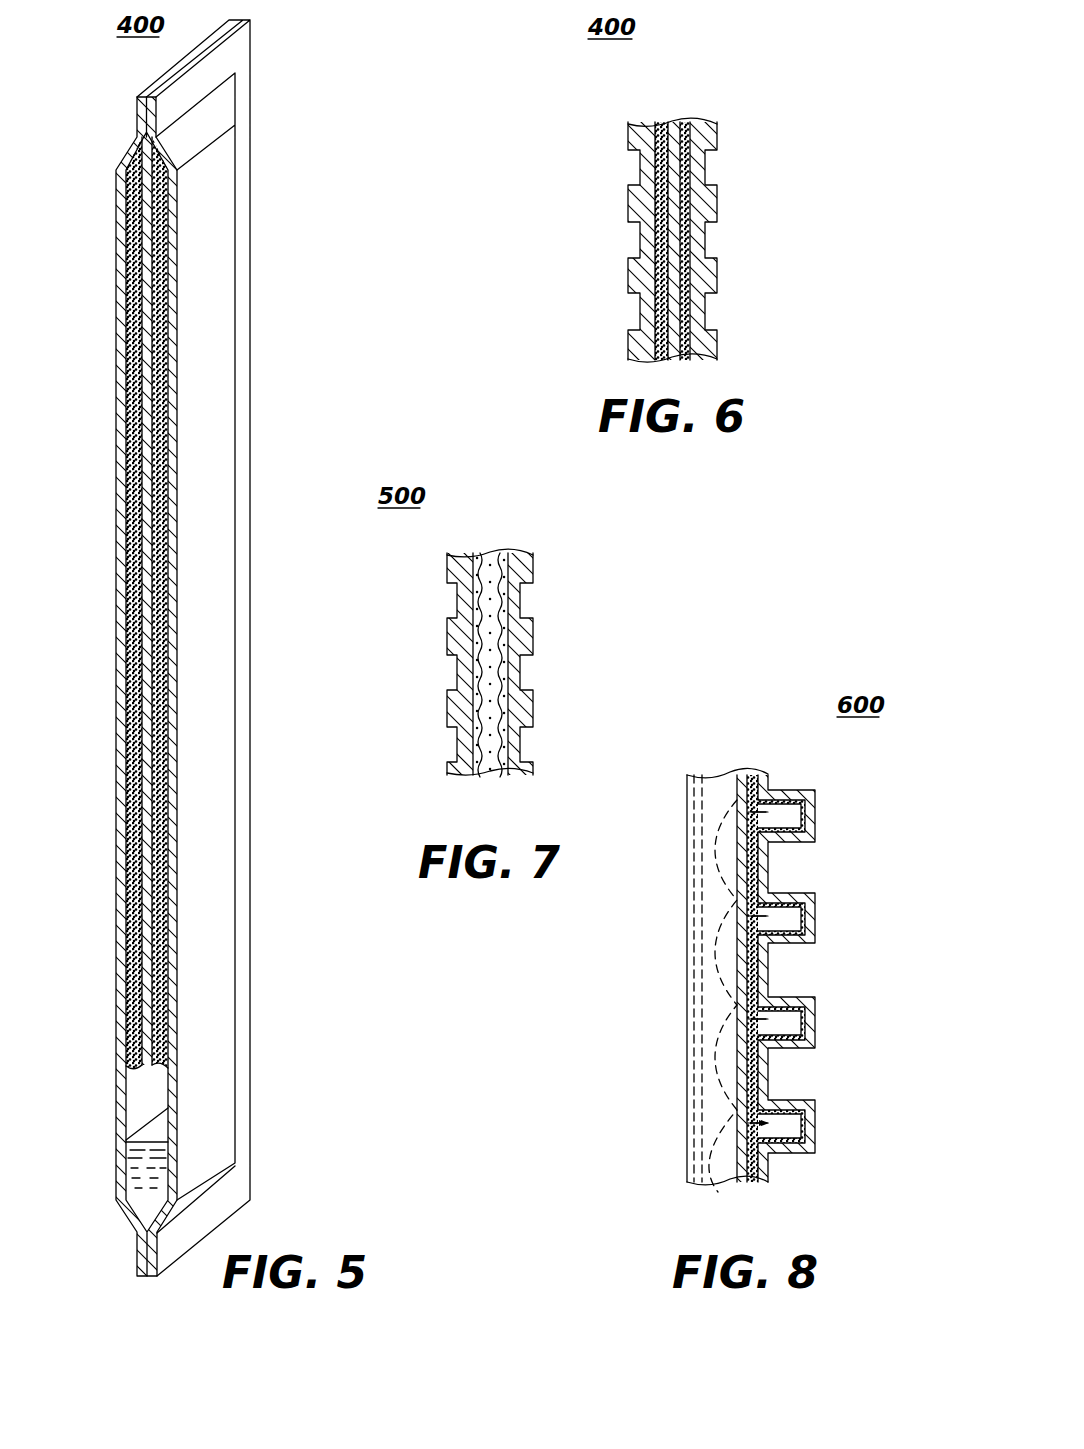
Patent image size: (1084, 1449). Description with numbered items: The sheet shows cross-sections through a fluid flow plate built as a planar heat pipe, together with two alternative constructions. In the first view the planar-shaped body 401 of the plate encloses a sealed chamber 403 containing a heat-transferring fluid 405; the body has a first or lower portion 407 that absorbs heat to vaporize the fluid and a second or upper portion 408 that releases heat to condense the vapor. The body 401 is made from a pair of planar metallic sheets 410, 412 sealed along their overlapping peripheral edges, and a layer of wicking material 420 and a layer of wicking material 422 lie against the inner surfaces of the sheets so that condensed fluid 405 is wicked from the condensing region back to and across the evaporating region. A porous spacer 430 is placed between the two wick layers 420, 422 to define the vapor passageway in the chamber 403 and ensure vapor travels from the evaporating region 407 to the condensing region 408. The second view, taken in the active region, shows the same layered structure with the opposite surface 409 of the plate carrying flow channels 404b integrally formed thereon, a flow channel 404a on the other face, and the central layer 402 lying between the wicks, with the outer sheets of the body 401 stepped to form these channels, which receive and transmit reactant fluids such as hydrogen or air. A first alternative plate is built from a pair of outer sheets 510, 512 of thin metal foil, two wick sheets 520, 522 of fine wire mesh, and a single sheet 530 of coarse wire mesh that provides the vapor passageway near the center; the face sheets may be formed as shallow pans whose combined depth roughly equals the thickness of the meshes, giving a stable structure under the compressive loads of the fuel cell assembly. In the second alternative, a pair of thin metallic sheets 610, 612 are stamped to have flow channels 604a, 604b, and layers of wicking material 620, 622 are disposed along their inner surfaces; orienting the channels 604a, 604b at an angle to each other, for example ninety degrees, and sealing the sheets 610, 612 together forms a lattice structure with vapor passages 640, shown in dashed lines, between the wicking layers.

In FIG. 5, the planar-shaped body 401 is at (257, 39).
In FIG. 6, the planar-shaped body 401 is at (697, 116).
In FIG. 6, the membrane 402 is at (711, 121).
In FIG. 5, the sealed chamber 403 is at (147, 1092).
In FIG. 6, the flow channel 404a is at (705, 310).
In FIG. 6, the flow channel 404b is at (640, 310).
In FIG. 5, the heat-transferring fluid 405 is at (147, 1187).
In FIG. 5, the lower portion 407 is at (212, 829).
In FIG. 5, the upper portion 408 is at (212, 356).
In FIG. 6, the opposite surface 409 is at (635, 121).
In FIG. 5, the planar-shaped metallic sheet 410 is at (122, 988).
In FIG. 5, the planar-shaped metallic sheet 412 is at (172, 1013).
In FIG. 5, the layer of wicking material 420 is at (137, 900).
In FIG. 5, the layer of wicking material 422 is at (157, 922).
In FIG. 5, the porous spacer 430 is at (148, 807).
In FIG. 7, the outer sheet 510 is at (457, 637).
In FIG. 7, the outer sheet 512 is at (522, 637).
In FIG. 7, the wick sheet 520 is at (480, 768).
In FIG. 7, the wick sheet 522 is at (500, 768).
In FIG. 7, the coarse wire mesh sheet 530 is at (488, 552).
In FIG. 8, the flow channel 604a is at (800, 868).
In FIG. 8, the flow channel 604b is at (722, 916).
In FIG. 8, the thin metallic sheet 610 is at (688, 775).
In FIG. 8, the thin metallic sheet 612 is at (811, 797).
In FIG. 8, the layer of wicking material 620 is at (748, 1185).
In FIG. 8, the layer of wicking material 622 is at (755, 1185).
In FIG. 8, the vapor passage 640 is at (737, 800).